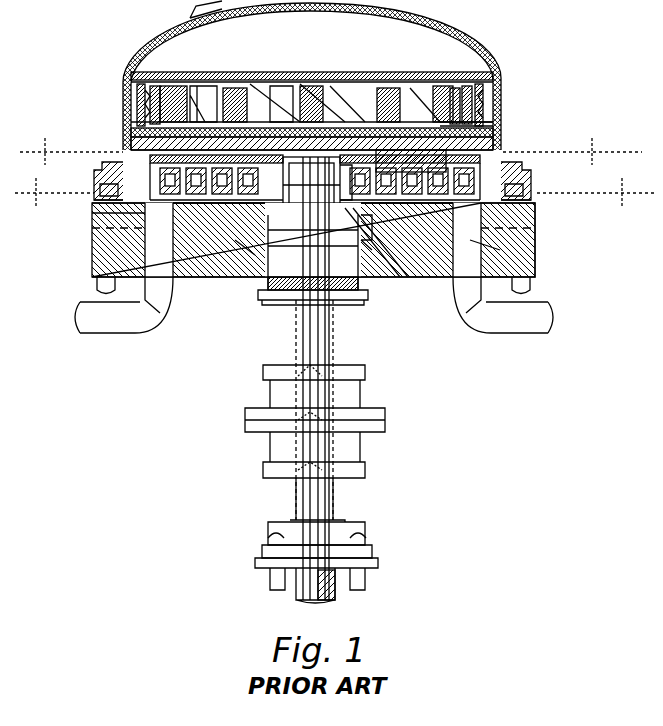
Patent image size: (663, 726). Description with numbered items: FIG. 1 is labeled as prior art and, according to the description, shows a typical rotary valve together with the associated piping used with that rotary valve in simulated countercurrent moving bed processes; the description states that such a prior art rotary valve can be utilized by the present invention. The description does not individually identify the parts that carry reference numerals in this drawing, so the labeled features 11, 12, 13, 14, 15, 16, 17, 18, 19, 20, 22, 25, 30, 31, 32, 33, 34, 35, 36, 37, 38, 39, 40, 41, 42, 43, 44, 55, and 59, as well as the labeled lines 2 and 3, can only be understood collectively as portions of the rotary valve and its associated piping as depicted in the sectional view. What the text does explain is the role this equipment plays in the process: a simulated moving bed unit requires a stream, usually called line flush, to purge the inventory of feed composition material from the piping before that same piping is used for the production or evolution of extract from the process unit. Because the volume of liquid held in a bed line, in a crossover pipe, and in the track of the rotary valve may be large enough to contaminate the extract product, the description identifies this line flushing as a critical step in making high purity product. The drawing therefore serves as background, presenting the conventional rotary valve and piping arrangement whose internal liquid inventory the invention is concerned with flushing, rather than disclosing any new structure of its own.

The base housing 11 is at (100, 284).
The dome cover 12 is at (418, 22).
The housing top wall 13 is at (118, 238).
The side fitting 14 is at (98, 170).
The housing wall 15 is at (115, 258).
The circuit board support 16 is at (128, 144).
The cover flange 17 is at (490, 146).
The side connector 18 is at (96, 190).
The housing bore 19 is at (488, 252).
The passage 20 is at (370, 242).
The housing body 22 is at (313, 238).
The housing shoulder 25 is at (313, 215).
The terminal block 30 is at (470, 186).
The central terminal 31 is at (311, 185).
The terminal contact 32 is at (311, 176).
The terminal wall 33 is at (353, 182).
The board lower layer 34 is at (488, 124).
The terminal cover 35 is at (411, 161).
The side electronic component 36 is at (128, 90).
The top plate 37 is at (294, 73).
The electronic component 38 is at (400, 74).
The electronic component 39 is at (470, 104).
The central shaft 40 is at (333, 345).
The shaft bushing 41 is at (367, 232).
The mounting flange 42 is at (262, 304).
The adjustment nut assembly 43 is at (372, 410).
The lower fitting 44 is at (296, 496).
The electronic component 55 is at (378, 114).
The electronic component 59 is at (302, 120).
The section line 2- 2 is at (335, 193).
The section line 3- 3 is at (331, 150).